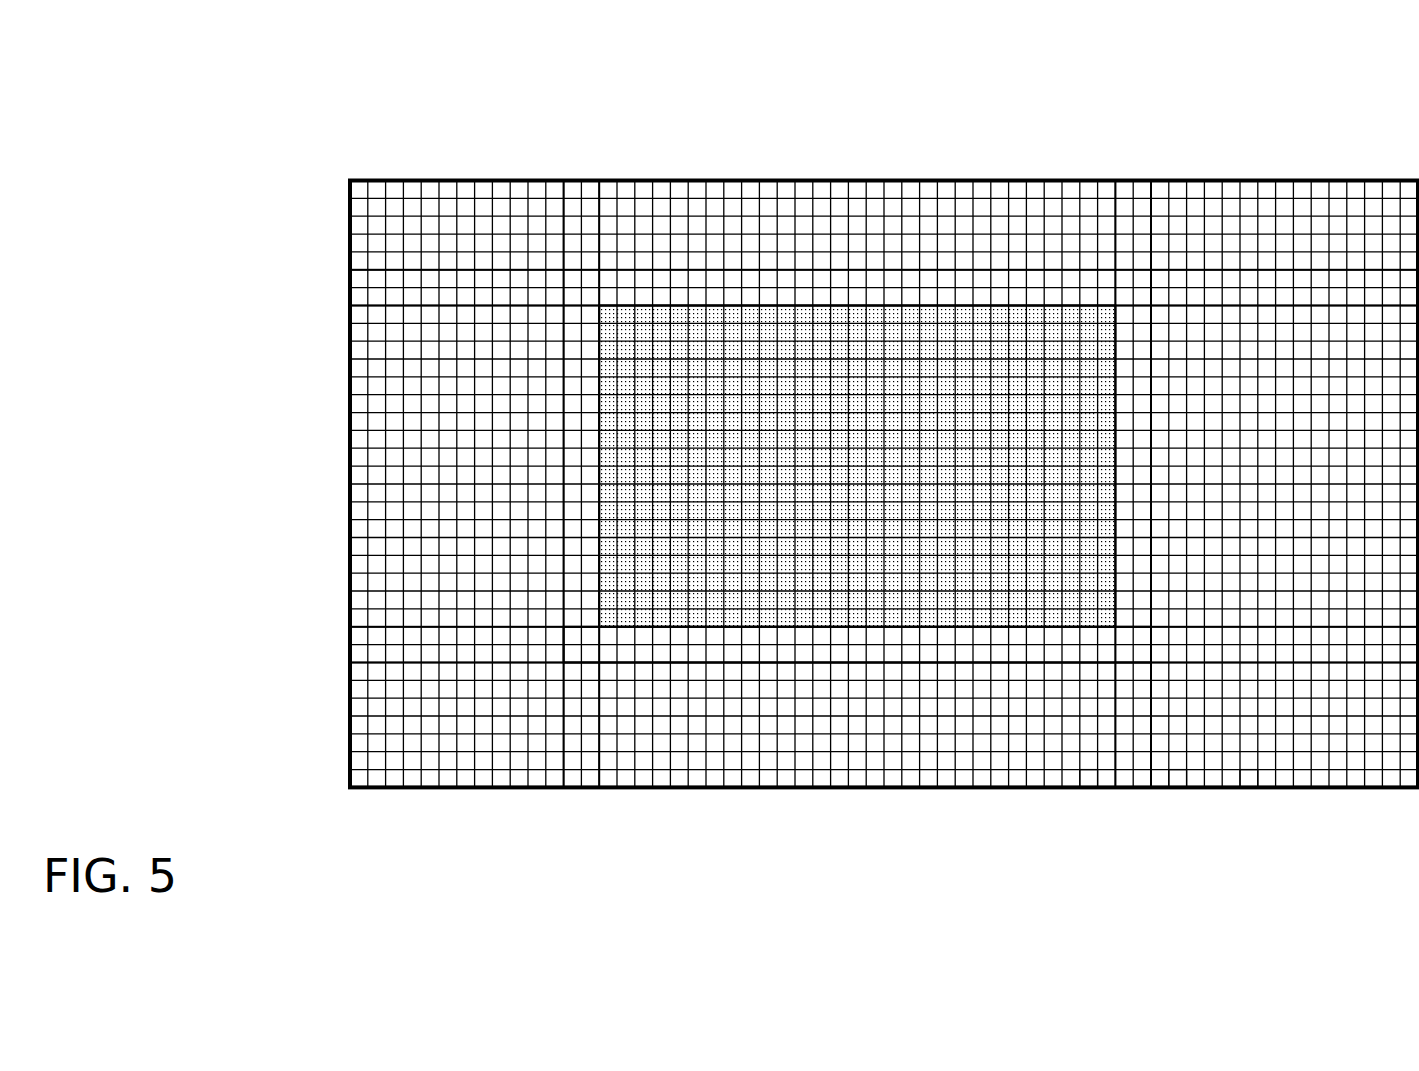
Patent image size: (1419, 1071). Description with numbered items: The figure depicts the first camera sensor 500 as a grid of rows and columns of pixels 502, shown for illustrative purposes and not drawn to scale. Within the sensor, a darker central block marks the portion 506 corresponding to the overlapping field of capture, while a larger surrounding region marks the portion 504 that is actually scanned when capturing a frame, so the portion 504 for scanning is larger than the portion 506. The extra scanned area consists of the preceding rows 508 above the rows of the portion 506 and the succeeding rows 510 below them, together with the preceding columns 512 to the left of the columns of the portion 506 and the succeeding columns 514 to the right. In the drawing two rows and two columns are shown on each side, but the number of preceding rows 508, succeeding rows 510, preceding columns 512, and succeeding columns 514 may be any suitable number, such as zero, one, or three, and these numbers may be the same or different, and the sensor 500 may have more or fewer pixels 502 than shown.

The first camera sensor 500 is at (157, 52).
The pixels 502 is at (1088, 777).
The portion for scanning 504 is at (857, 655).
The portion corresponding to the overlapping field of capture 506 is at (982, 318).
The preceding rows 508 is at (350, 307).
The succeeding rows 510 is at (350, 662).
The preceding columns 512 is at (599, 180).
The succeeding columns 514 is at (1151, 180).